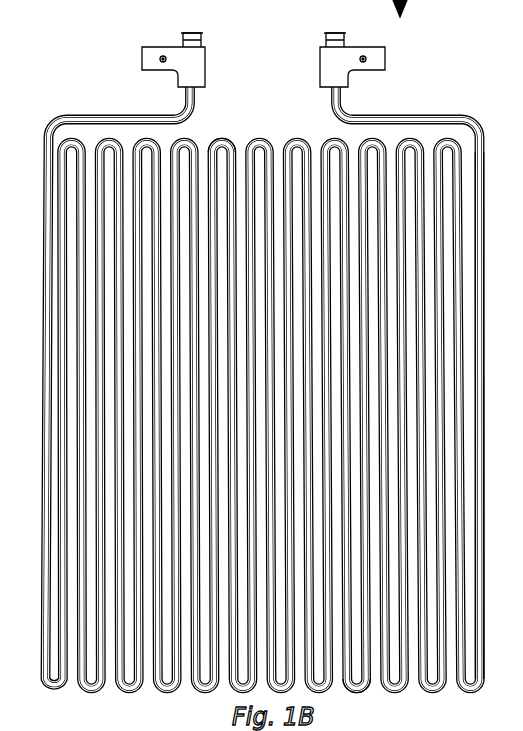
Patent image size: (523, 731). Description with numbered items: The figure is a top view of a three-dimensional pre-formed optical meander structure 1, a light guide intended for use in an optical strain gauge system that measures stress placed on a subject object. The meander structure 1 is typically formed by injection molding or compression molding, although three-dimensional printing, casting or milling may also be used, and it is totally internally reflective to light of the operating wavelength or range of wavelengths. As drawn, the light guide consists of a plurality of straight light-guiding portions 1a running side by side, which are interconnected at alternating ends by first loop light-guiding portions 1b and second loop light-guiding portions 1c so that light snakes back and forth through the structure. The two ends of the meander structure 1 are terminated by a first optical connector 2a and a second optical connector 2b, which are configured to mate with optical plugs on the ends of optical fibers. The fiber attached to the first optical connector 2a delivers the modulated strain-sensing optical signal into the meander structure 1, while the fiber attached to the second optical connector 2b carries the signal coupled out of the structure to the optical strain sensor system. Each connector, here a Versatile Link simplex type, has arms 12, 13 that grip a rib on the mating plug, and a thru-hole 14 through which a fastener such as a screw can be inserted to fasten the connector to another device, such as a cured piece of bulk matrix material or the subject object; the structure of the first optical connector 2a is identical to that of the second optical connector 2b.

The pre-formed optical meander structure 1 is at (272, 409).
The straight light-guiding portions 1a is at (462, 385).
The first loop light-guiding portions 1b is at (221, 139).
The second loop light-guiding portions 1c is at (354, 693).
The first optical connector 2a is at (378, 47).
The second optical connector 2b is at (152, 47).
The arm 12 is at (341, 33).
The arm 13 is at (330, 33).
The thru-hole 14 is at (368, 59).